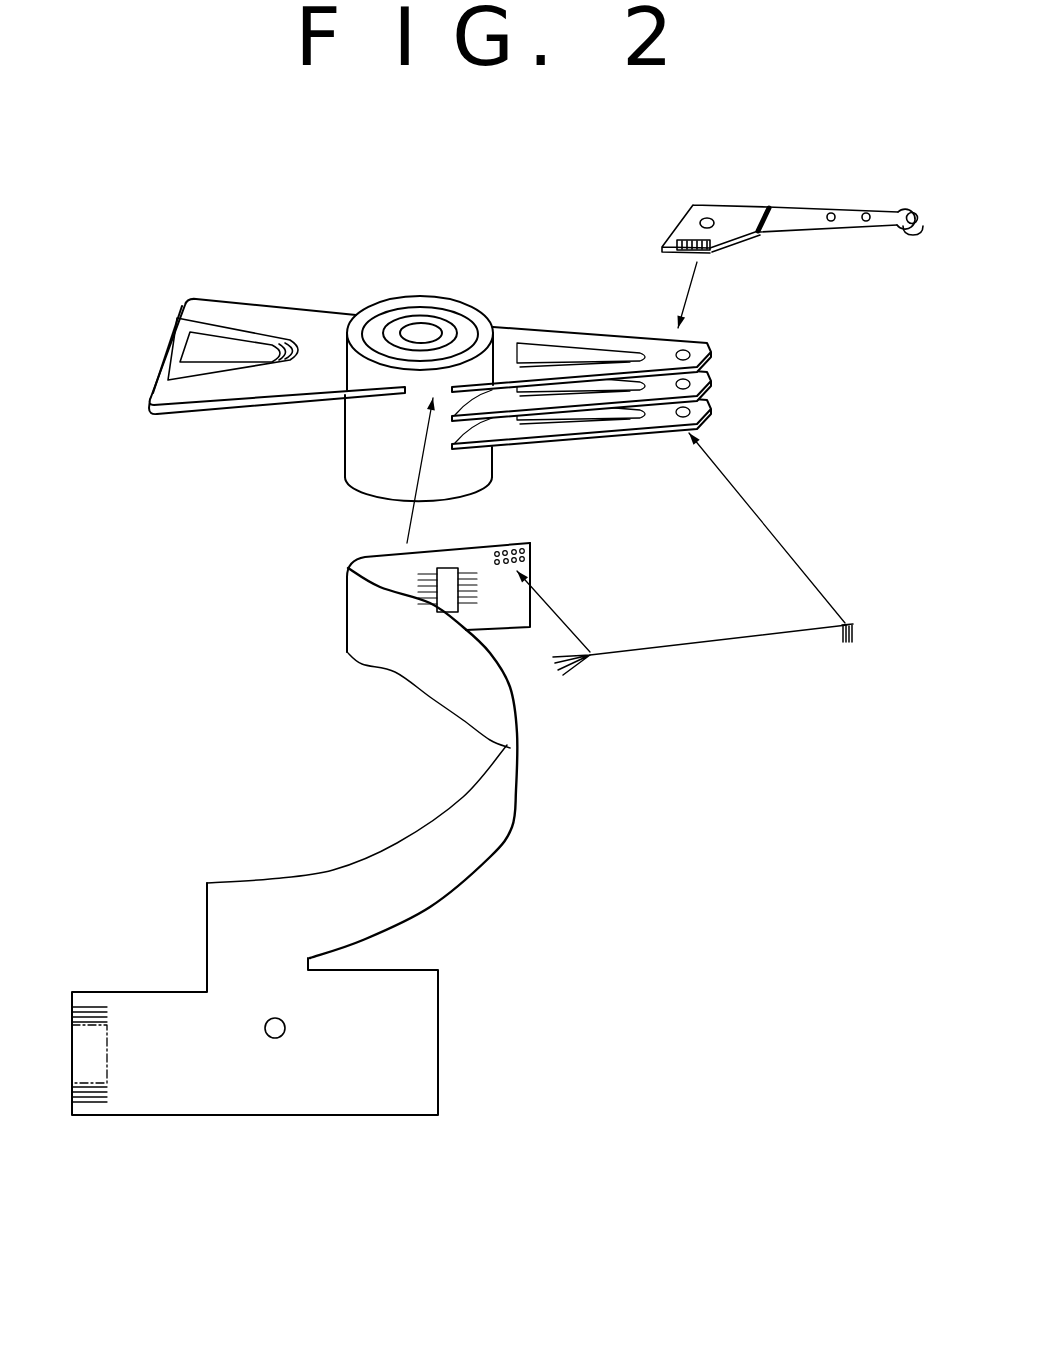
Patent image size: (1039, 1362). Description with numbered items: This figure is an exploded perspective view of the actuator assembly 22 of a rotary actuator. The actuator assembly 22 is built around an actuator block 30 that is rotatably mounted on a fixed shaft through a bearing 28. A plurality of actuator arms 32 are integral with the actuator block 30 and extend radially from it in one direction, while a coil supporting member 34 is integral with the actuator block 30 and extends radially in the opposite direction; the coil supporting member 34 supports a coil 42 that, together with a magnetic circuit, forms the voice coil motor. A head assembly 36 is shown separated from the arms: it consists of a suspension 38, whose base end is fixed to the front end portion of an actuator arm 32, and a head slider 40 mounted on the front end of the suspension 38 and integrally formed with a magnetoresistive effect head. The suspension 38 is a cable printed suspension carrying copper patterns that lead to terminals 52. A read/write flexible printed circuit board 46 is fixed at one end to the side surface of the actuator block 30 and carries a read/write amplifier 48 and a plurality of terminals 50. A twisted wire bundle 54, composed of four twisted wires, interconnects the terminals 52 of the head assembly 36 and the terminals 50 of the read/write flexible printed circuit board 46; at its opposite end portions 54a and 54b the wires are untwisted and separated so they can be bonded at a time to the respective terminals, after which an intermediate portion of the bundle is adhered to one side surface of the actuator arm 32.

The actuator assembly 22 is at (348, 283).
The bearing 28 is at (418, 312).
The actuator block 30 is at (347, 456).
The actuator arms 32 is at (580, 335).
The coil supporting member 34 is at (265, 314).
The head assembly 36 is at (757, 200).
The suspension 38 is at (845, 215).
The head slider 40 is at (910, 235).
The coil 42 is at (175, 347).
The read/write flexible printed circuit board 46 is at (477, 862).
The read/write amplifier 48 is at (450, 580).
The terminals 50 is at (520, 543).
The terminals 52 is at (703, 252).
The twisted wire bundle 54 is at (708, 640).
The end portion 54a is at (847, 650).
The end portion 54b is at (583, 662).